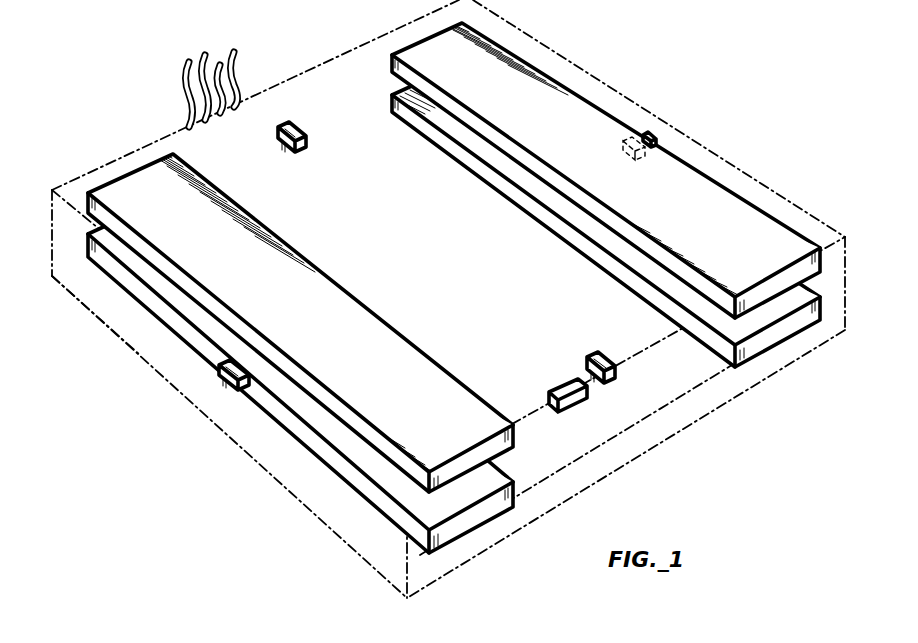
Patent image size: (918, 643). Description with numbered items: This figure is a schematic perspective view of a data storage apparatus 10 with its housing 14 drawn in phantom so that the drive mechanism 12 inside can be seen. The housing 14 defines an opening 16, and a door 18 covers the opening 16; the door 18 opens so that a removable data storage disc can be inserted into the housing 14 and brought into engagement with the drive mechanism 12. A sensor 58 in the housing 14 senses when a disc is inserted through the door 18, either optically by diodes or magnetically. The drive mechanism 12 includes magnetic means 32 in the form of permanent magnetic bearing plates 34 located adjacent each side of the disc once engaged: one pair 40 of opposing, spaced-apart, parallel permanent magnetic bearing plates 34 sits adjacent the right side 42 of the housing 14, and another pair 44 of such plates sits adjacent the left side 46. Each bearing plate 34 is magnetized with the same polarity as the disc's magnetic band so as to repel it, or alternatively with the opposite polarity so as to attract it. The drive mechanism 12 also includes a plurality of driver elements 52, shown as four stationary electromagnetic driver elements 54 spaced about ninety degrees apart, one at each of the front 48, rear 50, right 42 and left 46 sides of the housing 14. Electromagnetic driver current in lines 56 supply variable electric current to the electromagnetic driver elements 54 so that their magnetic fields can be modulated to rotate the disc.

The data storage apparatus 10 is at (449, 299).
The drive mechanism 12 is at (280, 450).
The housing 14 is at (719, 389).
The opening 16 is at (860, 206).
The door 18 is at (553, 445).
The magnetic means 32 is at (435, 288).
The permanent magnetic bearing plate 34 is at (568, 97).
The pair of permanent magnetic bearing plates 40 is at (675, 147).
The right side 42 is at (625, 92).
The pair of permanent magnetic bearing plates 44 is at (110, 295).
The left side 46 is at (135, 338).
The front side 48 is at (680, 415).
The rear side 50 is at (324, 58).
The driver element 52 is at (462, 287).
The electromagnetic driver element 54 is at (474, 282).
The electromagnetic driver current in lines 56 is at (207, 50).
The sensor 58 is at (566, 387).